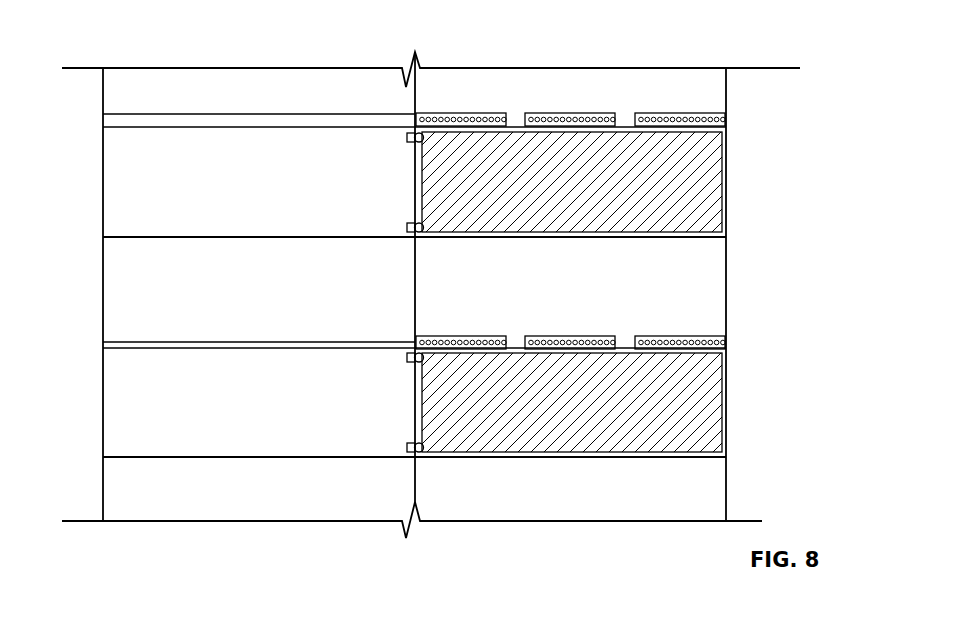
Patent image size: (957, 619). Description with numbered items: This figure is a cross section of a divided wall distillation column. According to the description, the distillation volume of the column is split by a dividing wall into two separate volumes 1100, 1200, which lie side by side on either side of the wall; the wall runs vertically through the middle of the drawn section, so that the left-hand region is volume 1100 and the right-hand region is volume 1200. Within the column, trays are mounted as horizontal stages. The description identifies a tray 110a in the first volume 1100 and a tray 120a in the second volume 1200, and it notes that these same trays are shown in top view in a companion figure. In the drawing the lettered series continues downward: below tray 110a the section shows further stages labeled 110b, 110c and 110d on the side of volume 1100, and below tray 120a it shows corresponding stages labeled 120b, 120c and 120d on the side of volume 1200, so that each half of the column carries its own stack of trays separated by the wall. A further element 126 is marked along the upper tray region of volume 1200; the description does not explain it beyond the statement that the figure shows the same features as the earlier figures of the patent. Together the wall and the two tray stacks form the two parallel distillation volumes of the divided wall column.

The volume 1100 is at (209, 94).
The volume 1200 is at (608, 94).
The tray 110a is at (168, 125).
The second layer 110b is at (134, 237).
The third layer 110c is at (134, 345).
The fourth layer 110d is at (134, 457).
The tray 120a is at (627, 126).
The second electrode layer 120b is at (689, 237).
The third electrode layer 120c is at (626, 348).
The fourth electrode layer 120d is at (707, 457).
The contact strip 126 is at (552, 113).